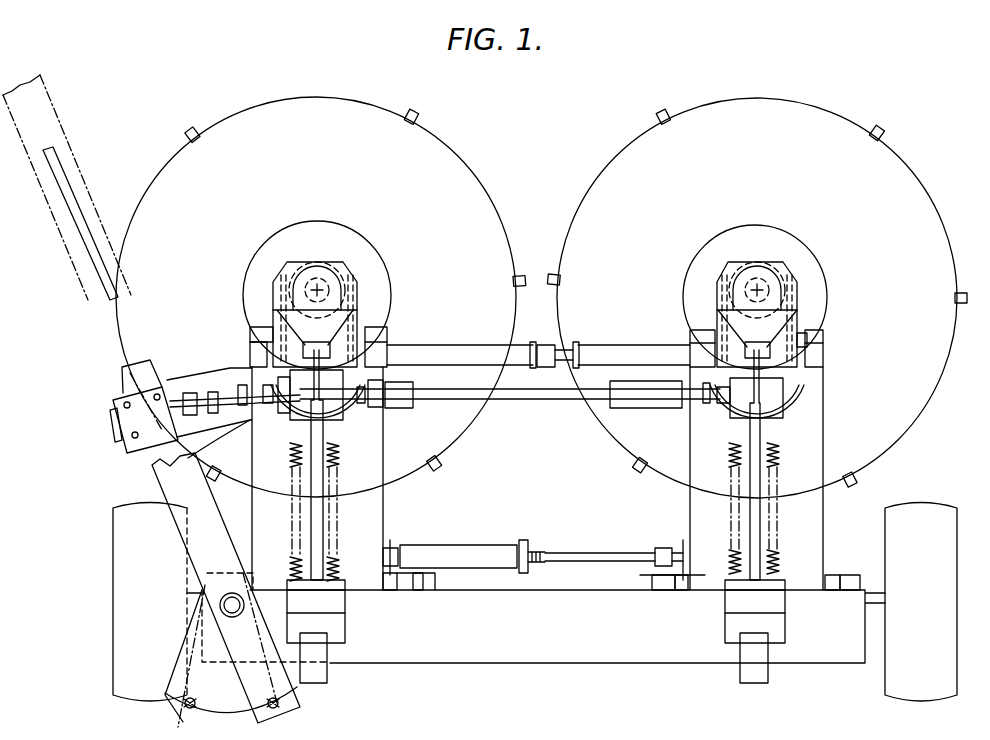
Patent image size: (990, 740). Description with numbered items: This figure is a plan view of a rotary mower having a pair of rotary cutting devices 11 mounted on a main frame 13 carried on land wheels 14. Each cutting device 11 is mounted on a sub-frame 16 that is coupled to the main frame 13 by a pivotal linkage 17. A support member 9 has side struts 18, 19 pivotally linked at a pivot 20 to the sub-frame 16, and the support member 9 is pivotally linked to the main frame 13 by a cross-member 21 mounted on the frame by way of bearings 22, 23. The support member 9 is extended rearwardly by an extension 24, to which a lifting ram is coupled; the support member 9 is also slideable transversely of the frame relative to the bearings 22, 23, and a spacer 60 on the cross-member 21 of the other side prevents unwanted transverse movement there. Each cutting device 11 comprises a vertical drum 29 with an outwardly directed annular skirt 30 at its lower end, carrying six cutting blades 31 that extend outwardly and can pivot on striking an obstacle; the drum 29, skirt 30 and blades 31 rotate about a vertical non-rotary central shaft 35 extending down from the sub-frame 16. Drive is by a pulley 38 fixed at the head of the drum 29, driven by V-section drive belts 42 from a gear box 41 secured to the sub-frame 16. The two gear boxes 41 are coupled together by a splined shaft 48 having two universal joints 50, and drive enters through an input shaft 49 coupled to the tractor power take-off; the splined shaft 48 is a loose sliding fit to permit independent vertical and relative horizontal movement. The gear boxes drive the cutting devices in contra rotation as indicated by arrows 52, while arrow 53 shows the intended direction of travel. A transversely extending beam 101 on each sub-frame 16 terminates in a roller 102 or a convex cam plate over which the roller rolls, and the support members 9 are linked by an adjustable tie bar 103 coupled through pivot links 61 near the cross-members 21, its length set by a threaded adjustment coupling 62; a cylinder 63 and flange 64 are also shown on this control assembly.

The support member 9 is at (256, 456).
The rotary cutting device 11 is at (236, 92).
The main frame 13 is at (516, 664).
The land wheel 14 is at (115, 584).
The sub-frame 16 is at (276, 283).
The pivotal linkage 17 is at (392, 500).
The side strut 18 is at (380, 356).
The side strut 19 is at (250, 357).
The pivot 20 is at (255, 330).
The cross-member 21 is at (255, 575).
The bearing 22 is at (222, 575).
The bearing 23 is at (426, 590).
The extension 24 is at (238, 614).
The drum 29 is at (278, 230).
The skirt 30 is at (338, 88).
The cutting blade 31 is at (182, 133).
The central shaft 35 is at (330, 300).
The pulley 38 is at (275, 300).
The gear box 41 is at (340, 424).
The V-section drive belt 42 is at (355, 300).
The splined shaft 48 is at (540, 400).
The input shaft 49 is at (248, 432).
The universal joint 50 is at (400, 409).
The arrow 52 is at (468, 146).
The arrow 53 is at (125, 72).
The spacer 60 is at (258, 548).
The pivot link 61 is at (392, 546).
The threaded adjustment coupling 62 is at (588, 553).
The hydraulic cylinder 63 is at (456, 545).
The flange 64 is at (523, 540).
The beam 101 is at (460, 345).
The roller 102 is at (535, 352).
The tie bar 103 is at (548, 530).